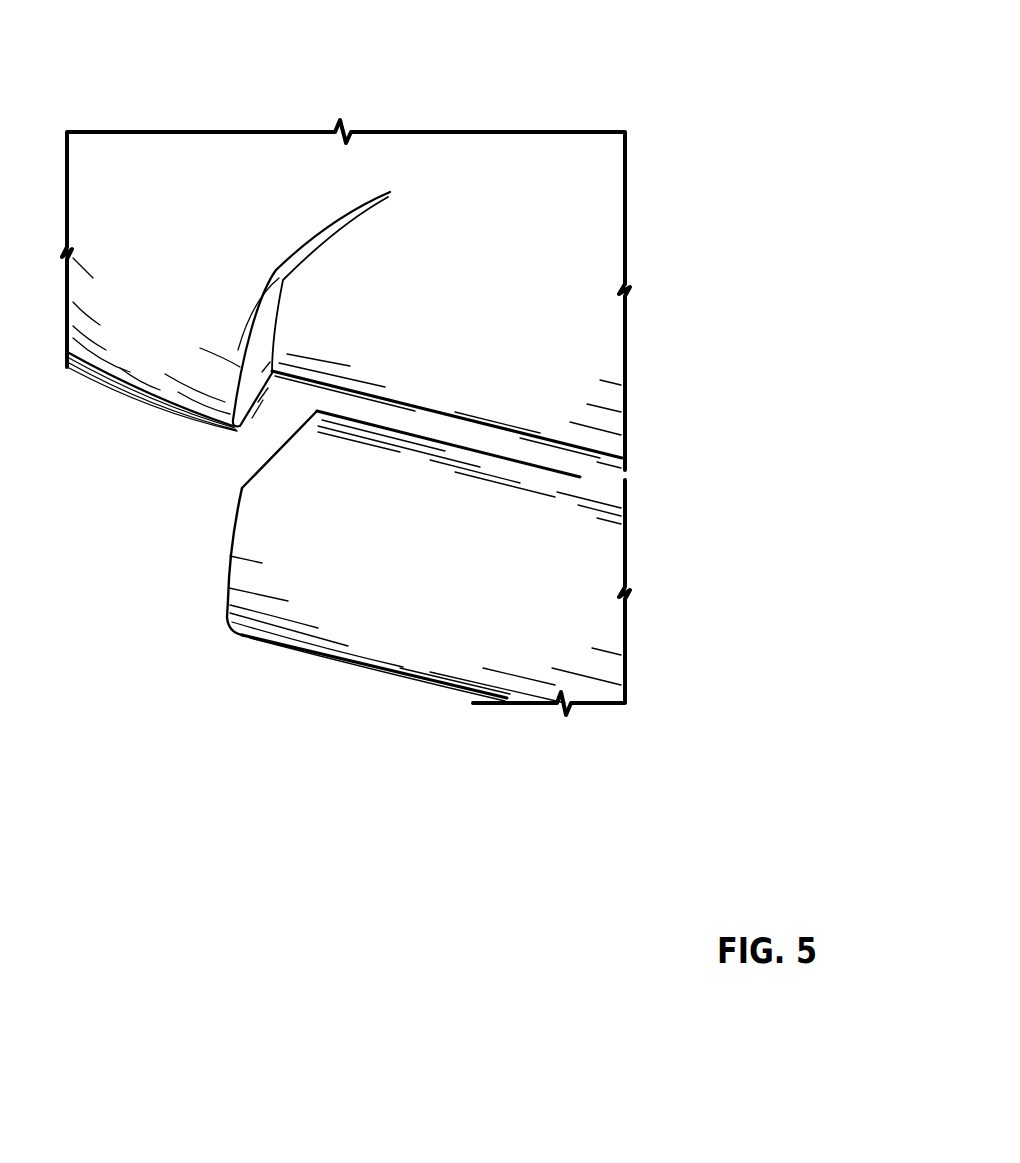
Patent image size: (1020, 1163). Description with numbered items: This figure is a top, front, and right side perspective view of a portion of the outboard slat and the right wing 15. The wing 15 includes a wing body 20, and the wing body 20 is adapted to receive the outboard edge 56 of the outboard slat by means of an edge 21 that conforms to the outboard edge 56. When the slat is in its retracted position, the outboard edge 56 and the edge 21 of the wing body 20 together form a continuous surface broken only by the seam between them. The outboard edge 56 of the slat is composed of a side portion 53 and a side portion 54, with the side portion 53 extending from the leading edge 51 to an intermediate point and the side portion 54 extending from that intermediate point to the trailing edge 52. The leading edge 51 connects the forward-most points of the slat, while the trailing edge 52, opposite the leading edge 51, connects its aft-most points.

The wing 15 is at (585, 73).
The wing body 20 is at (170, 220).
The edge 21 is at (320, 222).
The leading edge 51 is at (390, 668).
The trailing edge 52 is at (580, 470).
The side portion 53 is at (225, 583).
The side portion 54 is at (272, 455).
The outboard edge 56 is at (190, 647).